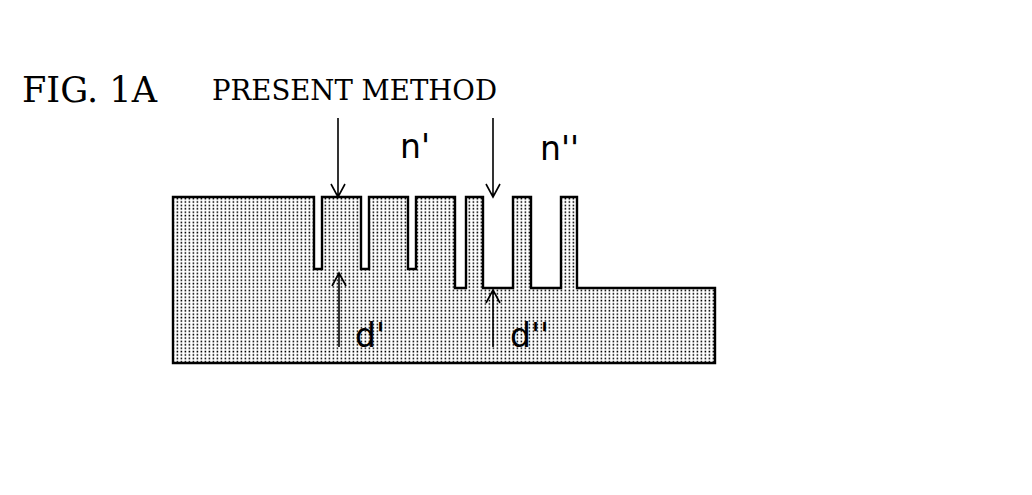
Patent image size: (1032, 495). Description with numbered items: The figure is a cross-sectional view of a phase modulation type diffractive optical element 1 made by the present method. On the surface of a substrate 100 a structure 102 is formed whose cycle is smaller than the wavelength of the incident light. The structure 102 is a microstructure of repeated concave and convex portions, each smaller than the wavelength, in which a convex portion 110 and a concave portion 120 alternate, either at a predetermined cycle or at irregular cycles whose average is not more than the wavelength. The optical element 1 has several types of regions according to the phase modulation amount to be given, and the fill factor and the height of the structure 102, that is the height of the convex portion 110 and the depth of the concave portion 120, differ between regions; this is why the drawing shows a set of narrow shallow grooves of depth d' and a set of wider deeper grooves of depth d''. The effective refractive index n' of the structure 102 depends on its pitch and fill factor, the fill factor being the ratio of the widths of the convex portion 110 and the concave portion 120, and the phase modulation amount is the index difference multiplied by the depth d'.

The phase modulation type diffractive optical element 1 is at (843, 162).
The substrate 100 is at (673, 313).
The structure 102 is at (690, 132).
The convex portion 110 is at (530, 210).
The concave portion 120 is at (542, 248).